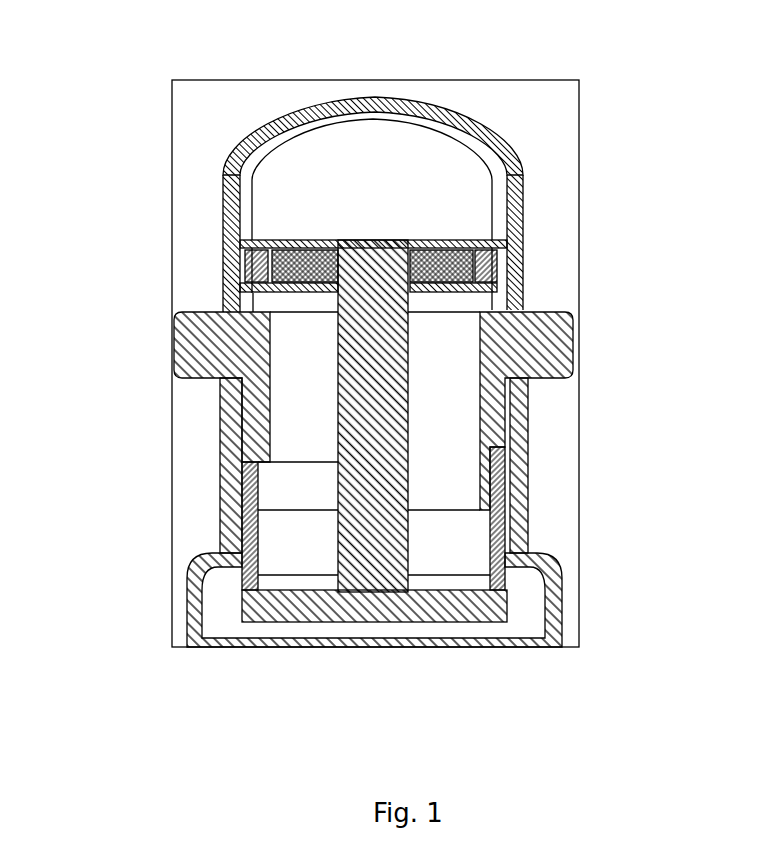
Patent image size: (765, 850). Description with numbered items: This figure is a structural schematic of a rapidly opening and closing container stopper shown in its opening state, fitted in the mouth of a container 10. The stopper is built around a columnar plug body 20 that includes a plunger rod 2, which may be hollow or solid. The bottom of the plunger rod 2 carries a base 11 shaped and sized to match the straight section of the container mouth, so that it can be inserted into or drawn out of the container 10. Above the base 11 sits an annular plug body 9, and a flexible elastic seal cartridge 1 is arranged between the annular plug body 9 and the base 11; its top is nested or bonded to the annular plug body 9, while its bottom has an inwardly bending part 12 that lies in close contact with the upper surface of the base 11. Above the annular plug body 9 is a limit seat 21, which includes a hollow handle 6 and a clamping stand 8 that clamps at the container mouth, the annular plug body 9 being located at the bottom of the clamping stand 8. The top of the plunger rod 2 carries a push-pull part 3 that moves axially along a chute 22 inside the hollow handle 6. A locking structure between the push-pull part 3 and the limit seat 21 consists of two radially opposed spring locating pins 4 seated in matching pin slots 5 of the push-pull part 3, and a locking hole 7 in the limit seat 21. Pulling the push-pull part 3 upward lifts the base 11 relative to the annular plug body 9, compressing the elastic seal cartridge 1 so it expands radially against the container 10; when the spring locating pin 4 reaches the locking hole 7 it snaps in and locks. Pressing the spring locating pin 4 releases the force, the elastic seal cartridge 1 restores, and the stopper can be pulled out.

The elastic seal cartridge 1 is at (252, 539).
The plunger rod 2 is at (220, 483).
The push-pull part 3 is at (258, 284).
The spring locating pin 4 is at (245, 257).
The pin slot 5 is at (258, 257).
The hollow handle 6 is at (507, 148).
The locking hole 7 is at (522, 198).
The clamping stand 8 is at (572, 338).
The annular plug body 9 is at (488, 413).
The container 10 is at (562, 608).
The base 11 is at (320, 615).
The bending part 12 is at (482, 575).
The columnar plug body 20 is at (340, 555).
The limit seat 21 is at (527, 298).
The chute 22 is at (250, 197).